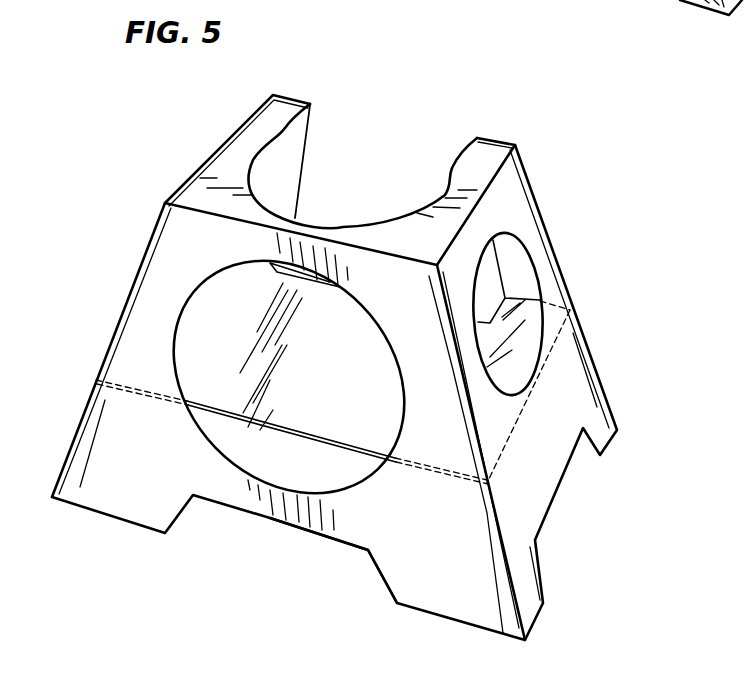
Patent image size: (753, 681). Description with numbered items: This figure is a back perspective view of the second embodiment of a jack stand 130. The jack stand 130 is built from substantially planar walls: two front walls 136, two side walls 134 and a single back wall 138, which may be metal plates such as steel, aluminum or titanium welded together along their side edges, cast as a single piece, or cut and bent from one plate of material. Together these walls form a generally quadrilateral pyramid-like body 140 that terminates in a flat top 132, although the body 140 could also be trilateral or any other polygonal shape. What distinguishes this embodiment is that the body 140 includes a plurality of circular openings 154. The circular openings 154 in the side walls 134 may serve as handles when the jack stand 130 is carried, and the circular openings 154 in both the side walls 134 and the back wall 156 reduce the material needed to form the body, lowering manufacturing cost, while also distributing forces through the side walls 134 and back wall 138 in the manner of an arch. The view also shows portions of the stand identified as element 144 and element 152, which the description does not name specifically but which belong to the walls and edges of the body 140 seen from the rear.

The jack stand 130 is at (578, 249).
The flat top 132 is at (487, 152).
The side walls 134 is at (550, 292).
The front walls 136 is at (517, 265).
The back wall 138 is at (150, 310).
The body 140 is at (112, 250).
The rear tab 144 is at (207, 157).
The side panel 152 is at (570, 505).
The circular openings 154 is at (317, 553).
The back wall 156 is at (353, 364).